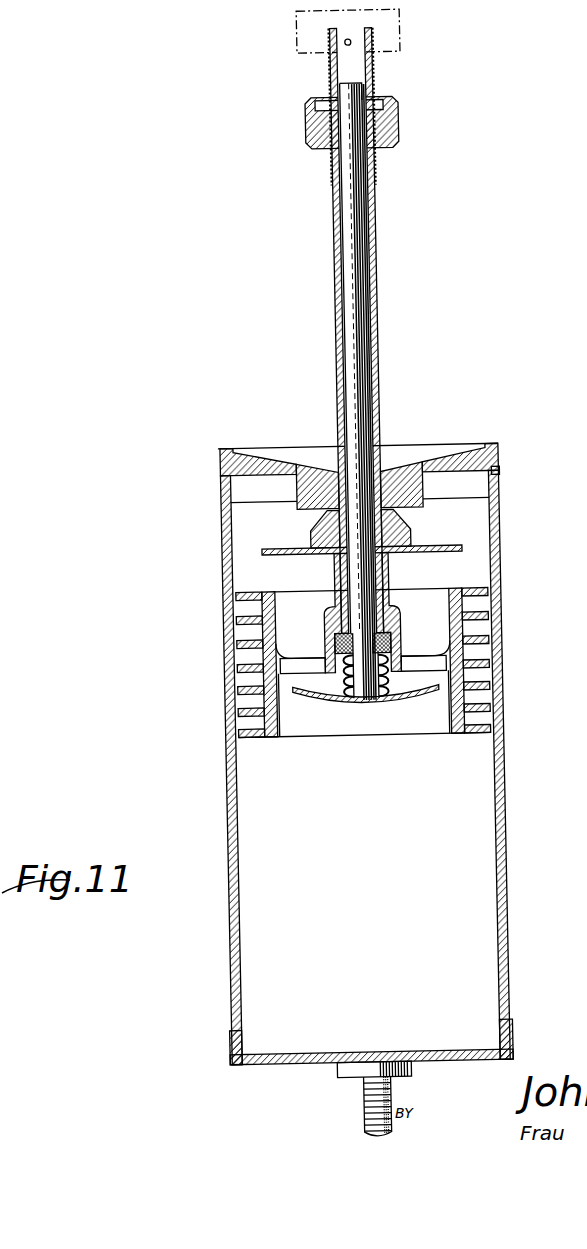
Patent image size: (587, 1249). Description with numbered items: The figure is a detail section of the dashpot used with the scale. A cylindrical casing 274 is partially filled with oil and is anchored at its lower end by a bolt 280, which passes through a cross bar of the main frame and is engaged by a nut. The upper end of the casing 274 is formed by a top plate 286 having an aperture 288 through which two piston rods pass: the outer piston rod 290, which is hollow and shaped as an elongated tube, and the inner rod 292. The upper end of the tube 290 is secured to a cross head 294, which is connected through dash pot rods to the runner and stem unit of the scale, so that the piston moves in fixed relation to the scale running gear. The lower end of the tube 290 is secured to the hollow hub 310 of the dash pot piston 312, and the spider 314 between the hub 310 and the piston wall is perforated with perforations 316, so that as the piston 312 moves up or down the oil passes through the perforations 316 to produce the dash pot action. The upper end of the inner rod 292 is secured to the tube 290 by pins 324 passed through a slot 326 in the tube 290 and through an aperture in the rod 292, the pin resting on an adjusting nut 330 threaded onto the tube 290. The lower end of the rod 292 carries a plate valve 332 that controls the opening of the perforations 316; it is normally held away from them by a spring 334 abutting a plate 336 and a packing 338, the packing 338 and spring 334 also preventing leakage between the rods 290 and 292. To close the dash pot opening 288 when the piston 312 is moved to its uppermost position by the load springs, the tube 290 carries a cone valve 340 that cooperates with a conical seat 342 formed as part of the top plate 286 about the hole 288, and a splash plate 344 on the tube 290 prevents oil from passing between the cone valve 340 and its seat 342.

The cylindrical casing 274 is at (502, 853).
The bolt 280 is at (359, 1115).
The plate 286 is at (262, 463).
The aperture 288 is at (388, 483).
The piston rod 290 is at (385, 286).
The rod 292 is at (358, 238).
The cross head 294 is at (415, 22).
The hollow hub 310 is at (401, 612).
The dash pot piston 312 is at (447, 673).
The spider 314 is at (436, 691).
The perforations 316 is at (316, 661).
The pins 324 is at (332, 103).
The slot 326 is at (386, 73).
The adjusting nut 330 is at (402, 138).
The plate valve 332 is at (331, 694).
The spring 334 is at (346, 704).
The plate 336 is at (339, 671).
The packing 338 is at (397, 704).
The cone valve 340 is at (420, 524).
The conical seat 342 is at (430, 491).
The splash plate 344 is at (294, 548).